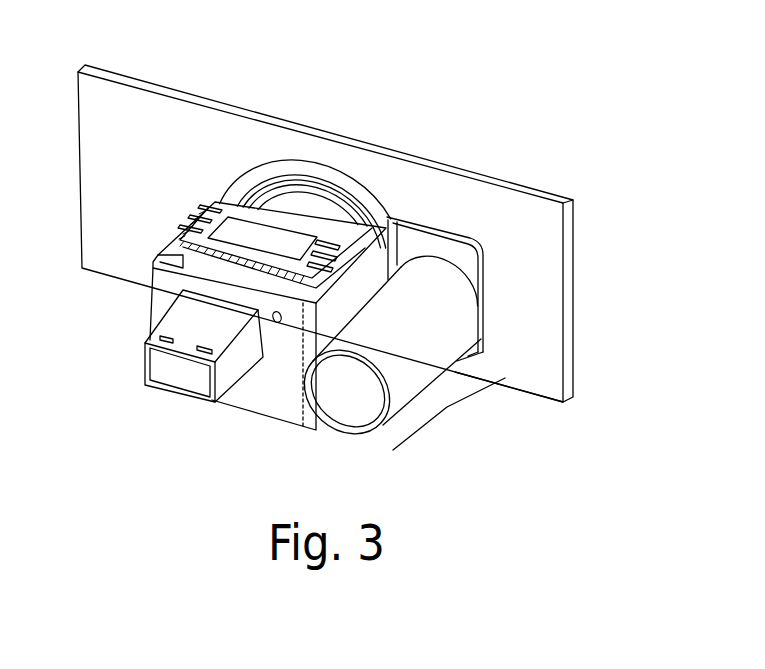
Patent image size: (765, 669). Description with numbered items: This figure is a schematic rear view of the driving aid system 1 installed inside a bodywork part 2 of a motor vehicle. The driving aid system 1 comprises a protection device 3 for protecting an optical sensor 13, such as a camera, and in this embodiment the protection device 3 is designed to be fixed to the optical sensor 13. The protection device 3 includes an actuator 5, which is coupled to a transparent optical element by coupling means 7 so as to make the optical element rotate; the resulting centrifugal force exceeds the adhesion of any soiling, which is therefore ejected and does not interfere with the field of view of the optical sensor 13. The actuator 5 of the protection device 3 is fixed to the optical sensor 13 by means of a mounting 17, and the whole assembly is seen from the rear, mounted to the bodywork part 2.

The driving aid system 1 is at (595, 85).
The bodywork part 2 is at (553, 320).
The protection device 3 is at (447, 378).
The actuator 5 is at (353, 410).
The coupling means 7 is at (323, 177).
The optical sensor 13 is at (185, 324).
The mounting 17 is at (257, 393).